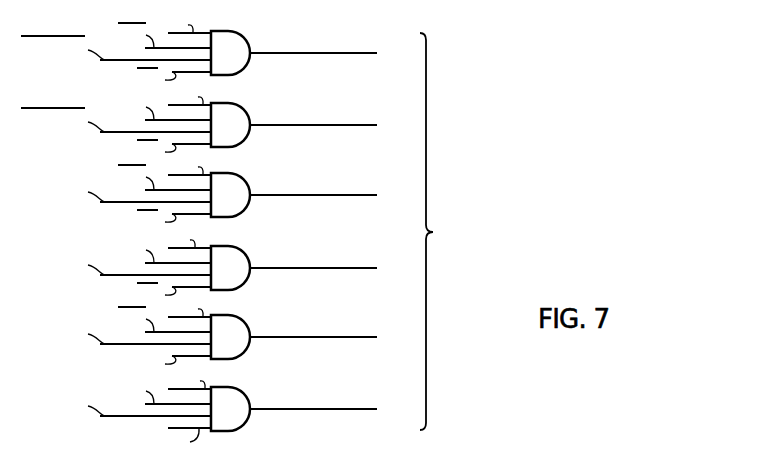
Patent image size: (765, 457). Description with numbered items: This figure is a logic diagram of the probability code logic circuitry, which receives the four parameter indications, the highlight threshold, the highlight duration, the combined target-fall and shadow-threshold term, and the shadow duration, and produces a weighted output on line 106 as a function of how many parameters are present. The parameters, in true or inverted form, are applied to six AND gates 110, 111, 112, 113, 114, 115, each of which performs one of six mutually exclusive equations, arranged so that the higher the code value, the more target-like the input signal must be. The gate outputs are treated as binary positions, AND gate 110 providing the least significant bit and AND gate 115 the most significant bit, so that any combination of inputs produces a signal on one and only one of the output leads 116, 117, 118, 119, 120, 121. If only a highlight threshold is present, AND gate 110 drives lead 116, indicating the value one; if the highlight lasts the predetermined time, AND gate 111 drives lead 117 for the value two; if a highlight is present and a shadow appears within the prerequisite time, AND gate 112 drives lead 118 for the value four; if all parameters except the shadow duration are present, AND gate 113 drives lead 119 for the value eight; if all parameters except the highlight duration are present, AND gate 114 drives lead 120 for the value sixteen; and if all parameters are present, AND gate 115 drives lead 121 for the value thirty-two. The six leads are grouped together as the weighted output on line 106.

The line 106 is at (451, 216).
The AND gate 110 is at (247, 22).
The AND gate 111 is at (247, 94).
The AND gate 112 is at (247, 164).
The AND gate 113 is at (247, 237).
The AND gate 114 is at (247, 306).
The AND gate 115 is at (247, 378).
The output lead 116 is at (301, 38).
The output lead 117 is at (301, 110).
The output lead 118 is at (301, 180).
The output lead 119 is at (301, 253).
The output lead 120 is at (301, 322).
The output lead 121 is at (301, 394).